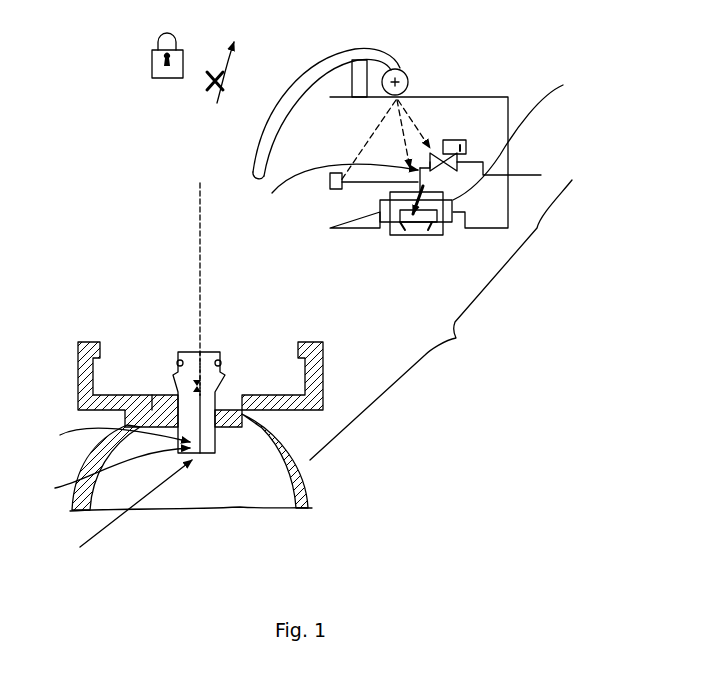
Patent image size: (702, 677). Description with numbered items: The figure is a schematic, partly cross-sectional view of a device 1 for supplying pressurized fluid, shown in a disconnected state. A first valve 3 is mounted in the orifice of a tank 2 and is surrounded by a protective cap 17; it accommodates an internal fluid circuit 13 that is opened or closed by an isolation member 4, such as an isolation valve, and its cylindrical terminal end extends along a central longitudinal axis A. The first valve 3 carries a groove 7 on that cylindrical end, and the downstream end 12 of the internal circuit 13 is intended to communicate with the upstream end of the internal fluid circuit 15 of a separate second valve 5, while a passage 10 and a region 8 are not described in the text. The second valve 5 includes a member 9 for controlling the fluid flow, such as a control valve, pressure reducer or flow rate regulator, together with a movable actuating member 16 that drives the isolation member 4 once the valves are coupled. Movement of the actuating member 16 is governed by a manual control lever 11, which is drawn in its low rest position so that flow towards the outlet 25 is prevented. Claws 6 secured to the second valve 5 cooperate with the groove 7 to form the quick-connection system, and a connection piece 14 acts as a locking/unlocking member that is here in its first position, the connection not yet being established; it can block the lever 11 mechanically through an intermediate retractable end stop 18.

The device for supplying pressurized fluid 1 is at (441, 320).
The tank 2 is at (306, 481).
The first valve 3 is at (115, 437).
The isolation member 4 is at (192, 372).
The second valve 5 is at (475, 110).
The claws 6 is at (430, 236).
The groove 7 is at (222, 362).
The sensor 8 is at (331, 188).
The member for controlling the fluid flow 9 is at (449, 150).
The valve outlet 10 is at (126, 517).
The control lever 11 is at (300, 84).
The downstream end of the internal circuit 12 is at (208, 346).
The internal fluid circuit 13 is at (106, 472).
The connection piece 14 is at (523, 132).
The internal fluid circuit 15 is at (336, 192).
The movable actuating member 16 is at (410, 226).
The protective cap 17 is at (322, 366).
The retractable end stop 18 is at (369, 72).
The outlet 25 is at (524, 170).
The central longitudinal axis A is at (200, 222).